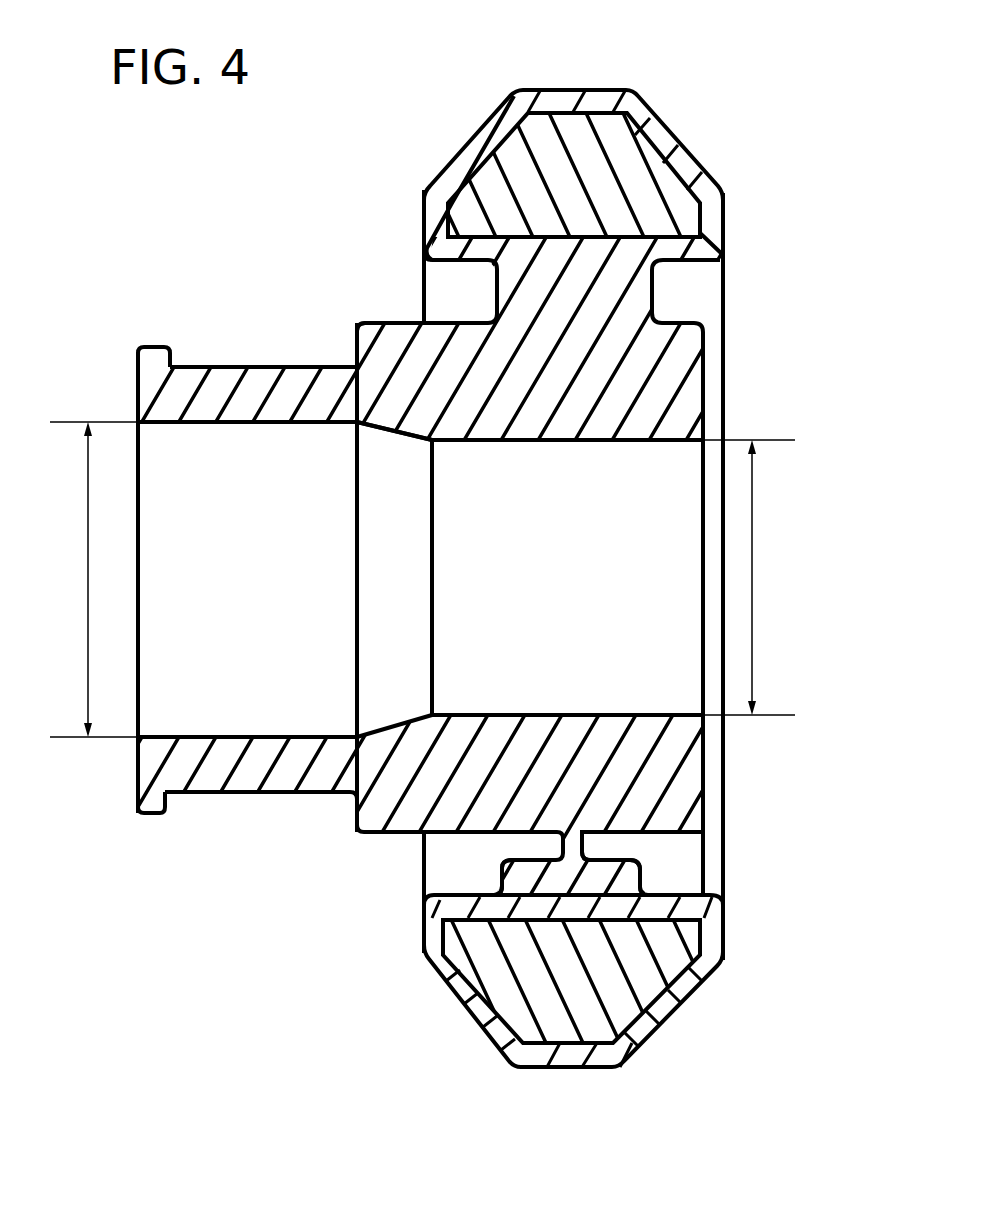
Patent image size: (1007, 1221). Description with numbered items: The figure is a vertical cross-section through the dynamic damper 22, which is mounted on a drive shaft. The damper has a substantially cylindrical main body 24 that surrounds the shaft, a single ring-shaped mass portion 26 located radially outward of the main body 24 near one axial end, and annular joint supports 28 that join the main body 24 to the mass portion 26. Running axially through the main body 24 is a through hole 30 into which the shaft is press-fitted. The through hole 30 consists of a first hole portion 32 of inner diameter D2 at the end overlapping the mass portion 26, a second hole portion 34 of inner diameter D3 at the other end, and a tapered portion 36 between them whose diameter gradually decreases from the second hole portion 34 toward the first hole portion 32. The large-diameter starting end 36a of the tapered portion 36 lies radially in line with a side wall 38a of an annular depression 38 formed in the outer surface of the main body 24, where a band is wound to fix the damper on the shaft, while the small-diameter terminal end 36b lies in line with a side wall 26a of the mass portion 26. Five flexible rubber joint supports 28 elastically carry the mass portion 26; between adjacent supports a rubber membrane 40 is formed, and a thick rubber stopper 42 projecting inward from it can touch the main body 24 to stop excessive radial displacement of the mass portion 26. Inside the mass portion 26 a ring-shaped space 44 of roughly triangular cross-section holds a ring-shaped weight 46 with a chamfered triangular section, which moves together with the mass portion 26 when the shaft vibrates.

The dynamic damper 22 is at (778, 93).
The main body 24 is at (709, 393).
The mass portion 26 is at (711, 149).
The side wall of the mass portion 26a is at (424, 236).
The joint supports 28 is at (652, 288).
The through hole 30 is at (467, 713).
The first hole portion 32 is at (676, 714).
The second hole portion 34 is at (186, 737).
The tapered portion 36 is at (397, 718).
The large-diameter starting end 36a is at (345, 428).
The small-diameter terminal end 36b is at (432, 441).
The annular depression 38 is at (205, 367).
The side wall of the annular depression 38a is at (355, 330).
The rubber membrane 40 is at (592, 834).
The rubber stopper 42 is at (632, 880).
The space 44 is at (612, 130).
The weight 46 is at (598, 192).
The inner diameter of the first hole portion D2 is at (751, 577).
The inner diameter of the second hole portion D3 is at (78, 579).